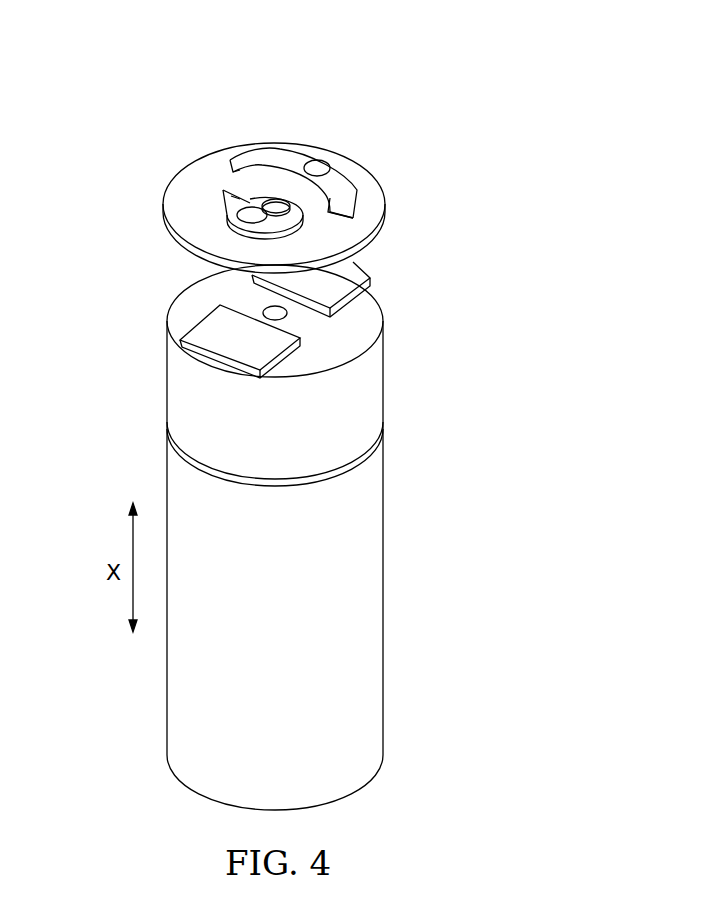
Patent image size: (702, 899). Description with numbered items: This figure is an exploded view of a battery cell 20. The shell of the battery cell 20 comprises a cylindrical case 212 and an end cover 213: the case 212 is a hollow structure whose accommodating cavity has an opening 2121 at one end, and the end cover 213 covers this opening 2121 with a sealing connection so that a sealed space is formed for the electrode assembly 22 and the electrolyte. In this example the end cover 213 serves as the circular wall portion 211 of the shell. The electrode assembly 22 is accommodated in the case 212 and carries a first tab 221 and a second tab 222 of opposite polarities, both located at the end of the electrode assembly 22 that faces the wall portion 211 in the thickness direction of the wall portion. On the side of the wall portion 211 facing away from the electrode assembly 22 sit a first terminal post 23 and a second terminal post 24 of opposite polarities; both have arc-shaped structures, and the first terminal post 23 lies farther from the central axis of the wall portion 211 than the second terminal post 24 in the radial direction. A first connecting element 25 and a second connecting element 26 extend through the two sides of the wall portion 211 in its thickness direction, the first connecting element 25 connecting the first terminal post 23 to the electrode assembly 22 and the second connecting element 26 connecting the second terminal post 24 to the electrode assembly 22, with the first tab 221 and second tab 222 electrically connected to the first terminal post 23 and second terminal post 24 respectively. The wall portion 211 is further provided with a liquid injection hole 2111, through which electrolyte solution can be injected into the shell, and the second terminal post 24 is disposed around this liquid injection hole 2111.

The battery cell 20 is at (292, 56).
The electrode assembly 22 is at (282, 330).
The first terminal post 23 is at (333, 180).
The second terminal post 24 is at (247, 217).
The first connecting element 25 is at (314, 162).
The second connecting element 26 is at (213, 179).
The wall portion 211 is at (332, 180).
The case 212 is at (279, 565).
The end cover 213 is at (332, 180).
The first tab 221 is at (352, 280).
The second tab 222 is at (203, 332).
The liquid injection hole 2111 is at (259, 190).
The opening 2121 is at (167, 417).